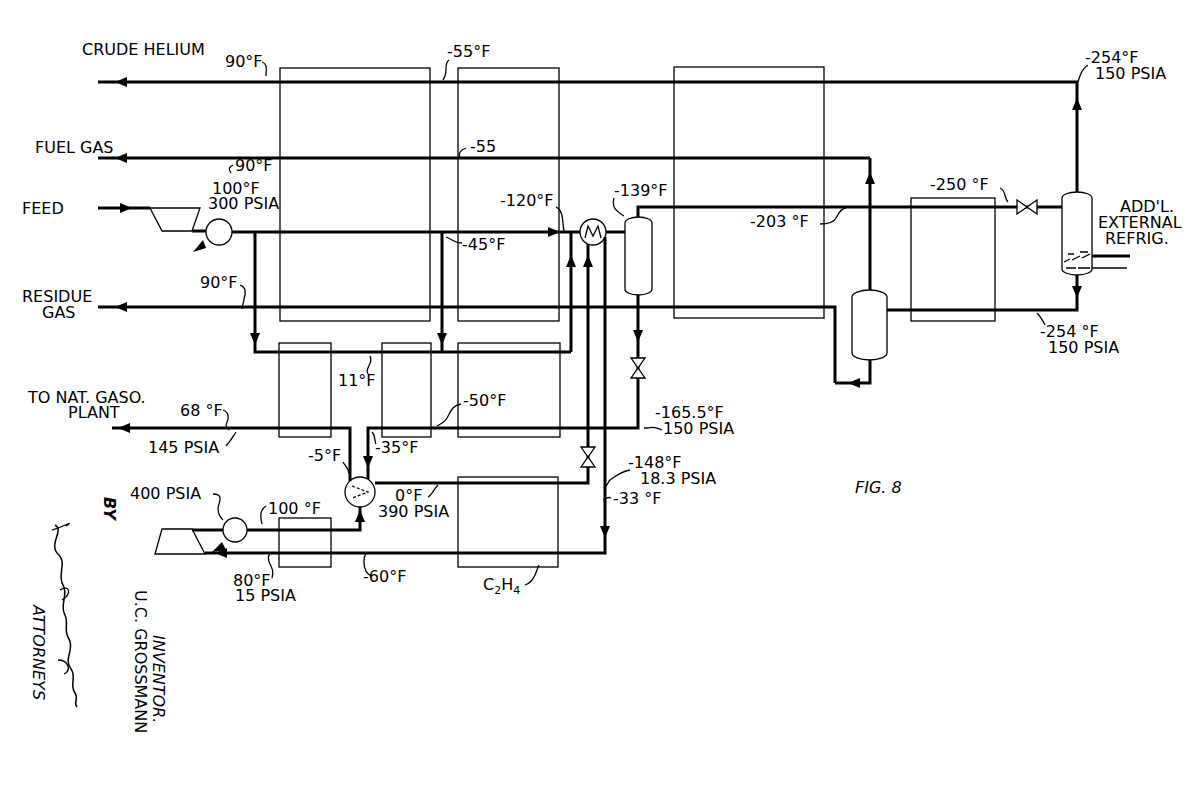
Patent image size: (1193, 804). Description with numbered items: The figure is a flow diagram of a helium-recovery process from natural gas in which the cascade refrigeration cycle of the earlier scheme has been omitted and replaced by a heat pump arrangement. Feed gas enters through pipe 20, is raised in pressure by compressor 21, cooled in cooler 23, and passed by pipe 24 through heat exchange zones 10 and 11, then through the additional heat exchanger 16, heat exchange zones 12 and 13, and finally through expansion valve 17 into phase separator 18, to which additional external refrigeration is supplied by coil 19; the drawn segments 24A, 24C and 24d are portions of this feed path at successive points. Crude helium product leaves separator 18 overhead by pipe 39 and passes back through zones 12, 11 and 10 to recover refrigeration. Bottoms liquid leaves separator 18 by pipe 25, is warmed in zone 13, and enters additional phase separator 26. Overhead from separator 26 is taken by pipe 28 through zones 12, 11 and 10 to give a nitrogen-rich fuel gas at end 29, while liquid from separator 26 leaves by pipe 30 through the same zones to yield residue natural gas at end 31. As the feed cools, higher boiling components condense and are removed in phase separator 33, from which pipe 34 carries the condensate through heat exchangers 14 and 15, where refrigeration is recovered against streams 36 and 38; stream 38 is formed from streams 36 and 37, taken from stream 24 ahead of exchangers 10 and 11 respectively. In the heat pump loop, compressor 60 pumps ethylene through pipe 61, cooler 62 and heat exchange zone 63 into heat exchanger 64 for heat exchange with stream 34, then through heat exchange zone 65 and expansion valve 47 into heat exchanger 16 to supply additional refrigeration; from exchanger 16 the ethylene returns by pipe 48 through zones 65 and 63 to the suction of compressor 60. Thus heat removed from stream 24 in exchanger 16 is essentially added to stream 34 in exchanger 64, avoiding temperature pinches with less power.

The heat exchange zone 10 is at (372, 78).
The heat exchange zone 11 is at (548, 72).
The heat exchange zone 12 is at (720, 72).
The heat exchange zone 13 is at (978, 296).
The heat exchanger 14 is at (523, 389).
The heat exchanger 15 is at (313, 389).
The additional heat exchanger 16 is at (586, 218).
The expansion valve 17 is at (1024, 205).
The phase separator 18 is at (1095, 198).
The coil 19 is at (1113, 270).
The pipe 20 is at (105, 204).
The compressor 21 is at (168, 206).
The cooler 23 is at (200, 237).
The pipe 24 is at (247, 222).
The feed line section 24A is at (381, 232).
The feed line section 24C is at (504, 232).
The overhead vapor line 24d is at (706, 206).
The pipe 25 is at (1085, 303).
The additional phase separator 26 is at (873, 331).
The pipe 28 is at (872, 168).
The end of pipe 28 29 is at (164, 159).
The pipe 30 is at (868, 387).
The end of pipe 30 31 is at (178, 307).
The phase separator 33 is at (651, 237).
The pipe 34 is at (639, 327).
The stream 36 is at (248, 351).
The stream 37 is at (444, 346).
The stream 38 is at (571, 344).
The pipe 39 is at (160, 82).
The expansion valve 47 is at (583, 464).
The pipe 48 is at (609, 551).
The compressor 60 is at (162, 531).
The pipe 61 is at (197, 528).
The cooler 62 is at (227, 518).
The heat exchange zone 63 is at (341, 578).
The heat exchanger 64 is at (344, 494).
The heat exchange zone 65 is at (505, 493).